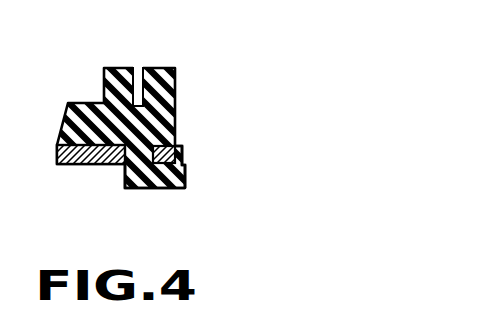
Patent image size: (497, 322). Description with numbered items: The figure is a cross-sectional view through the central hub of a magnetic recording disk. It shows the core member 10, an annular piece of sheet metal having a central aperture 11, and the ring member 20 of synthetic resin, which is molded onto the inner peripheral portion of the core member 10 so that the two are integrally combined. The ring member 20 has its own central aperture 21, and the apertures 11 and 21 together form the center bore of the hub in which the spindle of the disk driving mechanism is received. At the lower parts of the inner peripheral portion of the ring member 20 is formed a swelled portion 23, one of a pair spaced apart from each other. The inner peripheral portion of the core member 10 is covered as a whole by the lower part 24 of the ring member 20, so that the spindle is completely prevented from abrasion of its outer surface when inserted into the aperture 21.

The core member 10 is at (85, 168).
The central aperture 11 is at (173, 150).
The ring member 20 is at (106, 70).
The central aperture 21 is at (175, 87).
The swelled portion 23 is at (183, 165).
The lower part 24 is at (171, 189).